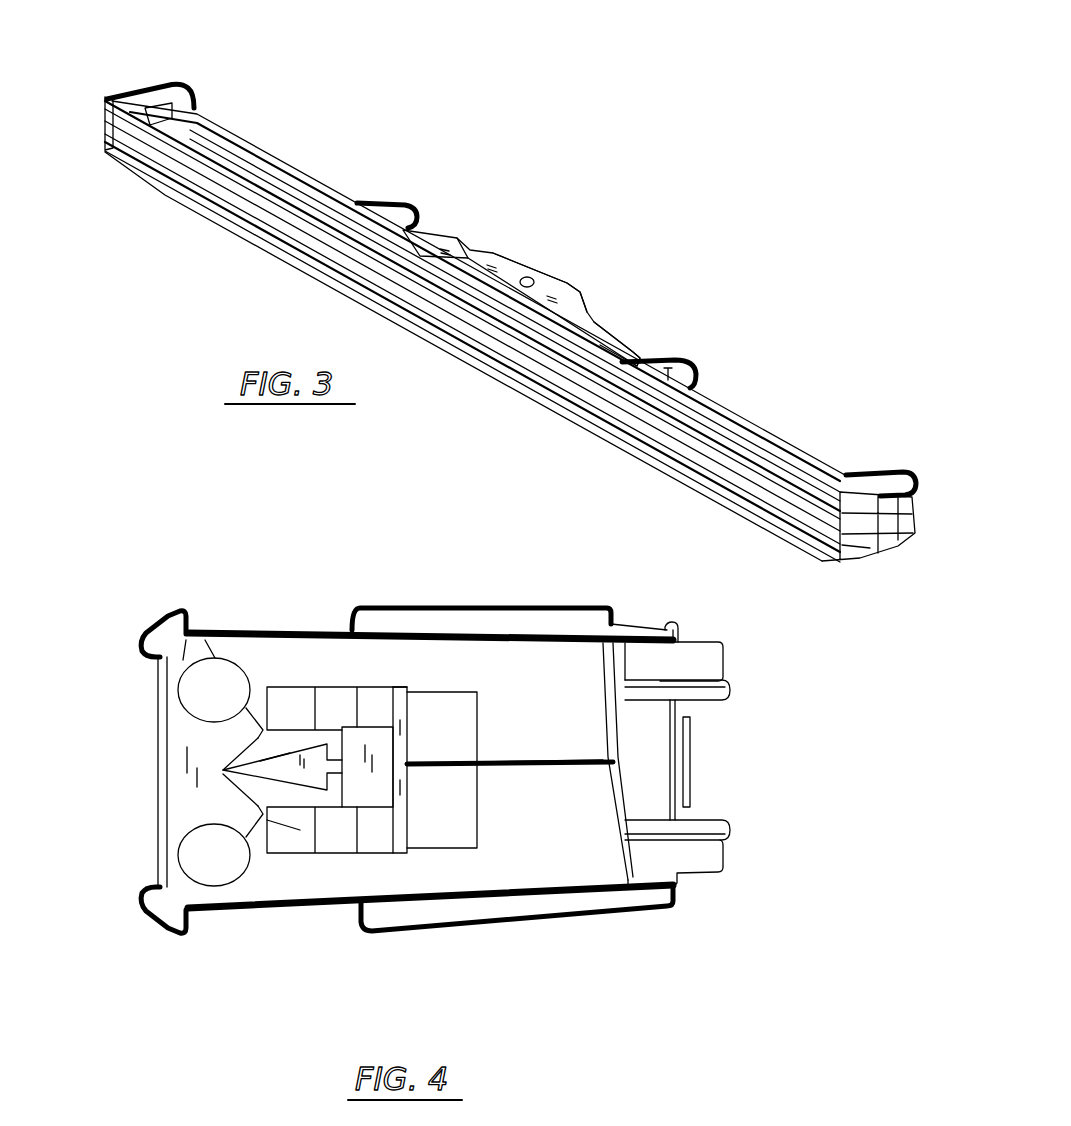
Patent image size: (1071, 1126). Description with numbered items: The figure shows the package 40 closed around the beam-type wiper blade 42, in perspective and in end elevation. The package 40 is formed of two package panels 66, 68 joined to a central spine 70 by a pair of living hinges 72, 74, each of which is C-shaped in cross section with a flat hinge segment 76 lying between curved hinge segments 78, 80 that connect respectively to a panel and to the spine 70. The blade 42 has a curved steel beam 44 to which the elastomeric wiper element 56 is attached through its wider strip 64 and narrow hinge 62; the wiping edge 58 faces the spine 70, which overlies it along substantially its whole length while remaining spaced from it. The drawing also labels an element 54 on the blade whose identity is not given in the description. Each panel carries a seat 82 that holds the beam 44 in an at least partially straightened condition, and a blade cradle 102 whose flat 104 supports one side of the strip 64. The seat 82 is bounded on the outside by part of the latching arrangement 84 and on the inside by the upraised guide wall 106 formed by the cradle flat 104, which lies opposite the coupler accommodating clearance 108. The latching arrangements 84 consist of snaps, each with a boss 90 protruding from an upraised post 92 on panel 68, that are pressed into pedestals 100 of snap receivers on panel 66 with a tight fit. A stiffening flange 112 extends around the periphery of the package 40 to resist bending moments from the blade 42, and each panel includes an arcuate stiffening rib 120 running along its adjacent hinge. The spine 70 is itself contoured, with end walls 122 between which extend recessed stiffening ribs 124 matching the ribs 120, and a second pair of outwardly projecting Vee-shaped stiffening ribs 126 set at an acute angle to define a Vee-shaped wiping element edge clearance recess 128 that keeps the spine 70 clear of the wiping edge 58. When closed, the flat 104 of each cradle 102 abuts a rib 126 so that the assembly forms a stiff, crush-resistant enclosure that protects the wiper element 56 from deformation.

In FIG. 3, the package 40 is at (286, 134).
In FIG. 4, the package 40 is at (699, 906).
In FIG. 3, the beam-type wiper blade 42 is at (513, 252).
In FIG. 4, the beam-type wiper blade 42 is at (737, 813).
In FIG. 3, the beam 44 is at (900, 533).
In FIG. 4, the beam 44 is at (415, 712).
In FIG. 3, the clamp member 54 is at (565, 284).
In FIG. 4, the clamp member 54 is at (705, 752).
In FIG. 3, the wiper element 56 is at (848, 556).
In FIG. 4, the wiper element 56 is at (298, 738).
In FIG. 4, the wiping edge 58 is at (222, 777).
In FIG. 4, the hinge 62 is at (333, 785).
In FIG. 4, the strip 64 is at (383, 695).
In FIG. 3, the package panel 66 is at (866, 568).
In FIG. 4, the package panel 66 is at (247, 920).
In FIG. 3, the package panel 68 is at (333, 183).
In FIG. 4, the package panel 68 is at (271, 628).
In FIG. 3, the spine 70 is at (746, 478).
In FIG. 4, the spine 70 is at (150, 800).
In FIG. 4, the hinge 72 is at (156, 930).
In FIG. 4, the hinge 74 is at (136, 634).
In FIG. 4, the flat hinge segment 76 is at (155, 622).
In FIG. 4, the curved hinge segment 78 is at (181, 608).
In FIG. 4, the curved hinge segment 80 is at (141, 662).
In FIG. 3, the seat 82 is at (888, 500).
In FIG. 4, the seat 82 is at (408, 680).
In FIG. 3, the latching arrangement 84 is at (190, 76).
In FIG. 4, the boss 90 is at (510, 766).
In FIG. 4, the post 92 is at (566, 716).
In FIG. 4, the pedestal 100 is at (574, 840).
In FIG. 4, the blade cradle 102 is at (448, 716).
In FIG. 4, the flat 104 is at (366, 710).
In FIG. 4, the guide wall 106 is at (440, 750).
In FIG. 3, the coupler accommodating clearance 108 is at (646, 337).
In FIG. 4, the stiffening flange 112 is at (676, 637).
In FIG. 4, the stiffening rib 120 is at (213, 655).
In FIG. 3, the end wall 122 is at (850, 532).
In FIG. 4, the end wall 122 is at (203, 752).
In FIG. 4, the recessed stiffening rib 124 is at (178, 710).
In FIG. 4, the stiffening rib 126 is at (240, 740).
In FIG. 4, the wiping element edge clearance recess 128 is at (275, 782).